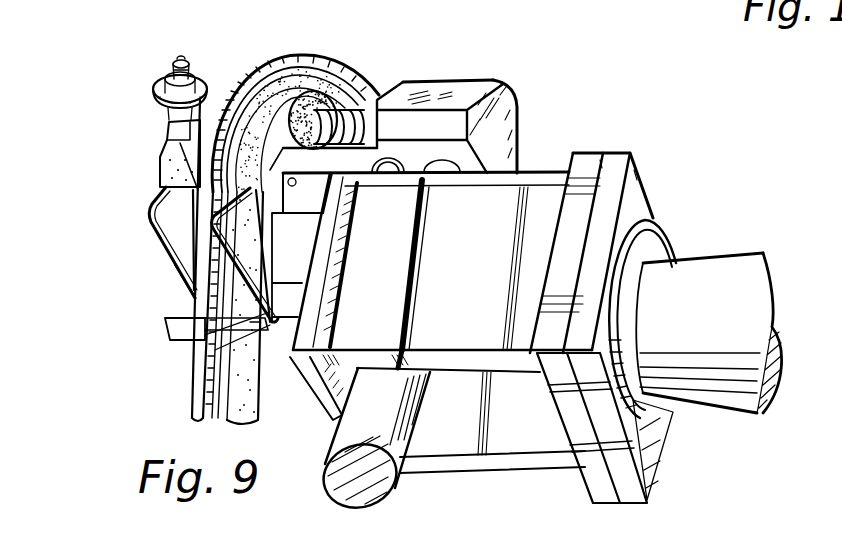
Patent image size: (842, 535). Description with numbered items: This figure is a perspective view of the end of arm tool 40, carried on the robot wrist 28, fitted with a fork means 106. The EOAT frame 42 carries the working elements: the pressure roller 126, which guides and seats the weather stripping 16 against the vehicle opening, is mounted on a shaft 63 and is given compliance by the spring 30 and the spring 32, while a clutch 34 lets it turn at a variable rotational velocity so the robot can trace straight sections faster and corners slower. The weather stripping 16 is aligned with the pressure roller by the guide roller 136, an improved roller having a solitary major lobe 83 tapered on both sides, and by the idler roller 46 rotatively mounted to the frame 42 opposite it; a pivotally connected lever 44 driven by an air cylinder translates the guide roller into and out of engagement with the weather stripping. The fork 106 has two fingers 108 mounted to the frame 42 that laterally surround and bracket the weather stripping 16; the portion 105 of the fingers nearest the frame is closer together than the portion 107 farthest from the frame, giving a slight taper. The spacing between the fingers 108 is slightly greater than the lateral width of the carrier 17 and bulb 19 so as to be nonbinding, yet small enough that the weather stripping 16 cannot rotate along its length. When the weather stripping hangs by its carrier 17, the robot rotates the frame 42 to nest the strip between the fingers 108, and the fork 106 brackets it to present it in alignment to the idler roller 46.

The weather stripping 16 is at (266, 58).
The carrier 17 is at (183, 407).
The bulb 19 is at (255, 398).
The robot wrist 28 is at (737, 263).
The spring 30 is at (301, 180).
The spring 32 is at (368, 177).
The clutch 34 is at (505, 122).
The end of arm tool 40 is at (494, 78).
The EOAT frame 42 is at (533, 198).
The lever 44 is at (169, 124).
The idler roller 46 is at (293, 215).
The shaft 63 is at (327, 120).
The major lobe 83 is at (156, 96).
The portion of the fingers 105 is at (250, 318).
The fork means 106 is at (144, 204).
The portion of the fingers 107 is at (187, 227).
The fingers 108 is at (187, 283).
The pressure roller 126 is at (333, 73).
The guide roller 136 is at (195, 64).